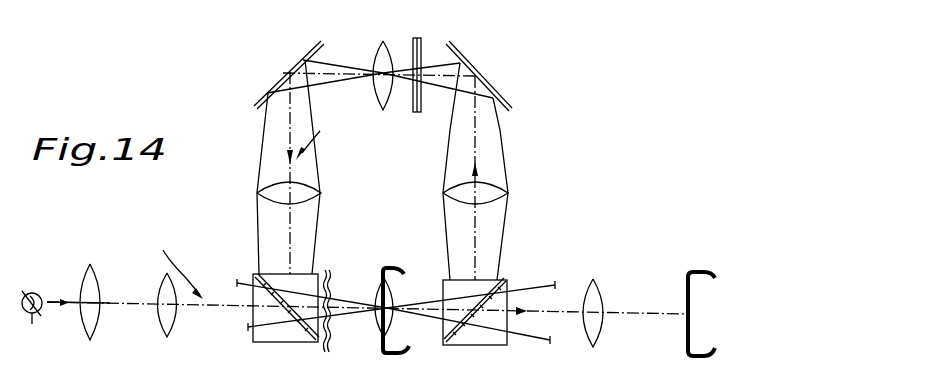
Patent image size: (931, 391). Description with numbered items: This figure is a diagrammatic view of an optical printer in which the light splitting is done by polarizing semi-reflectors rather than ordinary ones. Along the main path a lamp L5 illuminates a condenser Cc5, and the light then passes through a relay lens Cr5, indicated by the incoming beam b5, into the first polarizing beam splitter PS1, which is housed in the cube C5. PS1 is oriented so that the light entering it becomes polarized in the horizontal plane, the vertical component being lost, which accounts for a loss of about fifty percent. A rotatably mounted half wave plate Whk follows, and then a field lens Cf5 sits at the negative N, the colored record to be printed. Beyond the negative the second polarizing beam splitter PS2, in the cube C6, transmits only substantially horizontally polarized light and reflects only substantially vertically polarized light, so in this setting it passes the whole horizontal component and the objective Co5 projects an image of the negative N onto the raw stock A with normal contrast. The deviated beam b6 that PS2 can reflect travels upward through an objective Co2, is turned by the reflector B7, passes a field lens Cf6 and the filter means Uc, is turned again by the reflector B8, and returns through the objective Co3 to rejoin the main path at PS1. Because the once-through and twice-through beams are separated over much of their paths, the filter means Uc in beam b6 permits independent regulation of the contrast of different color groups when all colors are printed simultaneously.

The lamp L5 is at (28, 320).
The condenser Cc5 is at (93, 327).
The relay lens Cr5 is at (170, 317).
The light beam direction b5 is at (166, 269).
The polarizing beam splitter PS1 is at (263, 290).
The beam splitter cube C5 is at (280, 338).
The half wave plate Whk is at (360, 240).
The negative N is at (397, 268).
The field lens Cf5 is at (398, 327).
The polarizing beam splitter PS2 is at (500, 293).
The beam splitter cube C6 is at (487, 343).
The objective Co5 is at (595, 293).
The raw stock A is at (710, 275).
The reflector B8 is at (305, 55).
The field lens Cf6 is at (403, 33).
The filter means Uc is at (415, 112).
The reflector B7 is at (463, 66).
The deviated beam b6 is at (328, 144).
The objective Co3 is at (321, 193).
The objective Co2 is at (508, 193).